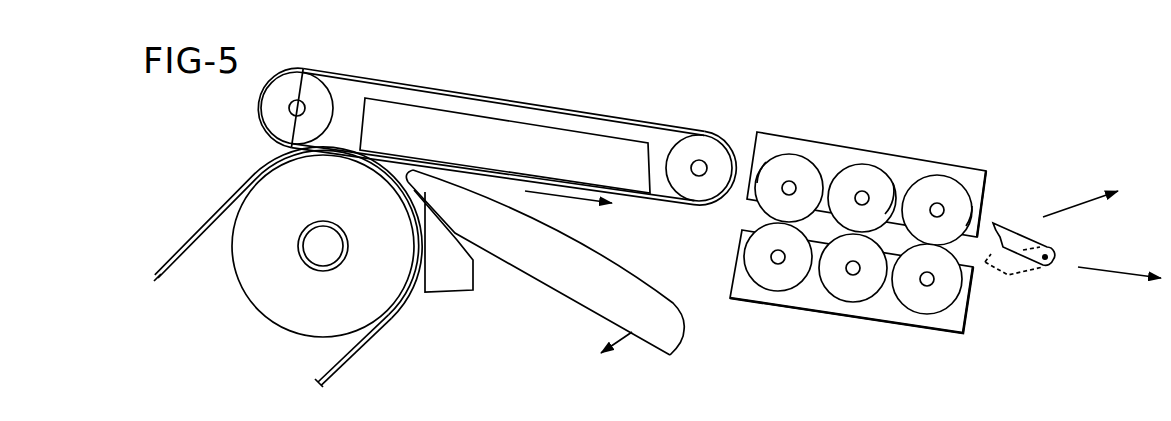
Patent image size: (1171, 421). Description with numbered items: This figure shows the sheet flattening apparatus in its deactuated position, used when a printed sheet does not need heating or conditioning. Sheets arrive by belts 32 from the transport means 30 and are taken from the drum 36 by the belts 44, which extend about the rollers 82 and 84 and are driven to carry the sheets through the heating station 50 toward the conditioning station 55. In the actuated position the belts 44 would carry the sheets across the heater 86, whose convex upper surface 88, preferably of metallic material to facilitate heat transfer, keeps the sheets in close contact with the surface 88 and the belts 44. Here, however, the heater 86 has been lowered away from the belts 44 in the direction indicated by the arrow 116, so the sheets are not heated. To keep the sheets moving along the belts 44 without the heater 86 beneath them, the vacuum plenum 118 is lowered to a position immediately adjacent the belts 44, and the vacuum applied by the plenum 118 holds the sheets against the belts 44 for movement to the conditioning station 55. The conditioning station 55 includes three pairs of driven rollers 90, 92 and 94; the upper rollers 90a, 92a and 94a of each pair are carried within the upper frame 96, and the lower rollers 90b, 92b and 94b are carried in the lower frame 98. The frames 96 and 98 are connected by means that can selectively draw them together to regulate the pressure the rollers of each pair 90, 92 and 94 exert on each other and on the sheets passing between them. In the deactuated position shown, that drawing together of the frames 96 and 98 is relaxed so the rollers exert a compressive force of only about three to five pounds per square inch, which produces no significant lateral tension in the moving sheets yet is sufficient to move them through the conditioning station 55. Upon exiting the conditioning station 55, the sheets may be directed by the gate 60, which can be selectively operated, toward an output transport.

The transport means 30 is at (236, 184).
The belts 32 is at (358, 347).
The drum 36 is at (257, 288).
The belts 44 is at (388, 83).
The heating station 50 is at (473, 123).
The conditioning station 55 is at (885, 223).
The gate 60 is at (1032, 240).
The roller 82 is at (275, 112).
The roller 84 is at (703, 142).
The heater 86 is at (543, 273).
The convex upper surface 88 is at (593, 247).
The roller pair 90 is at (798, 160).
The upper roller 90a is at (770, 172).
The lower roller 90b is at (777, 282).
The roller pair 92 is at (875, 166).
The upper roller 92a is at (887, 185).
The lower roller 92b is at (848, 290).
The roller pair 94 is at (949, 179).
The upper roller 94a is at (970, 202).
The lower roller 94b is at (922, 300).
The upper frame 96 is at (977, 183).
The lower frame 98 is at (958, 310).
The arrow 116 is at (662, 267).
The vacuum plenum 118 is at (442, 118).